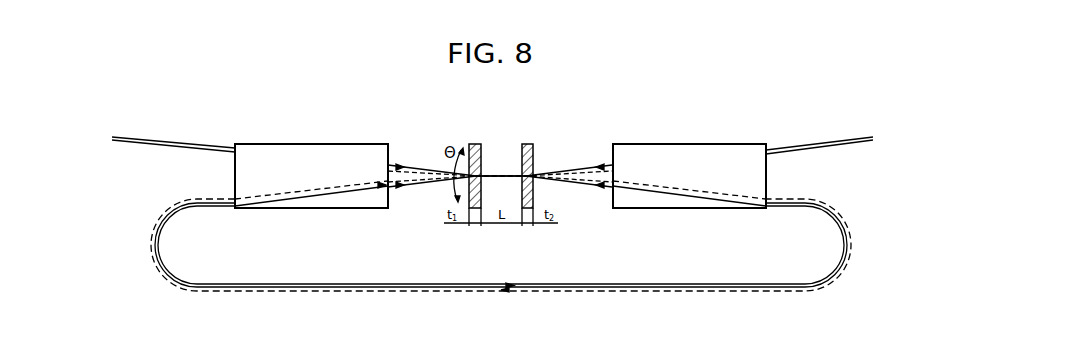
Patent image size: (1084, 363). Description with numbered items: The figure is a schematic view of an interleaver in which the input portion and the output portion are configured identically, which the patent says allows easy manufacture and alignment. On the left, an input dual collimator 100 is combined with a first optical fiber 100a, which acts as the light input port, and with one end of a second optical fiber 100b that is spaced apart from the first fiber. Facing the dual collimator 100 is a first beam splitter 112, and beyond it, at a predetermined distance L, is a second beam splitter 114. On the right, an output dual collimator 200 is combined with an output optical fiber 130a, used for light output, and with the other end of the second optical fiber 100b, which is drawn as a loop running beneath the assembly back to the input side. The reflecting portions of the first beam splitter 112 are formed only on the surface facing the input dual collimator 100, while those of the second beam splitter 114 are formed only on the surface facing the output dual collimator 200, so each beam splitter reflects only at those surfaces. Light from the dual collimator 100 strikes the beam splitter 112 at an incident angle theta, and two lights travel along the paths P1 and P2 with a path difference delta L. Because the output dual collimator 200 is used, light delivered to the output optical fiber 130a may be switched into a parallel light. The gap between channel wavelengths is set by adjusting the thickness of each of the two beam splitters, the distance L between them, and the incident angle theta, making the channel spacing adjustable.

The dual collimator 100 is at (313, 144).
The first optical fiber 100a is at (150, 141).
The second optical fiber 100b is at (197, 203).
The first beam splitter 112 is at (472, 144).
The second beam splitter 114 is at (527, 144).
The dual collimator 200 is at (688, 144).
The output optical fiber 130a is at (832, 143).
The path P1 is at (530, 291).
The path P2 is at (530, 284).